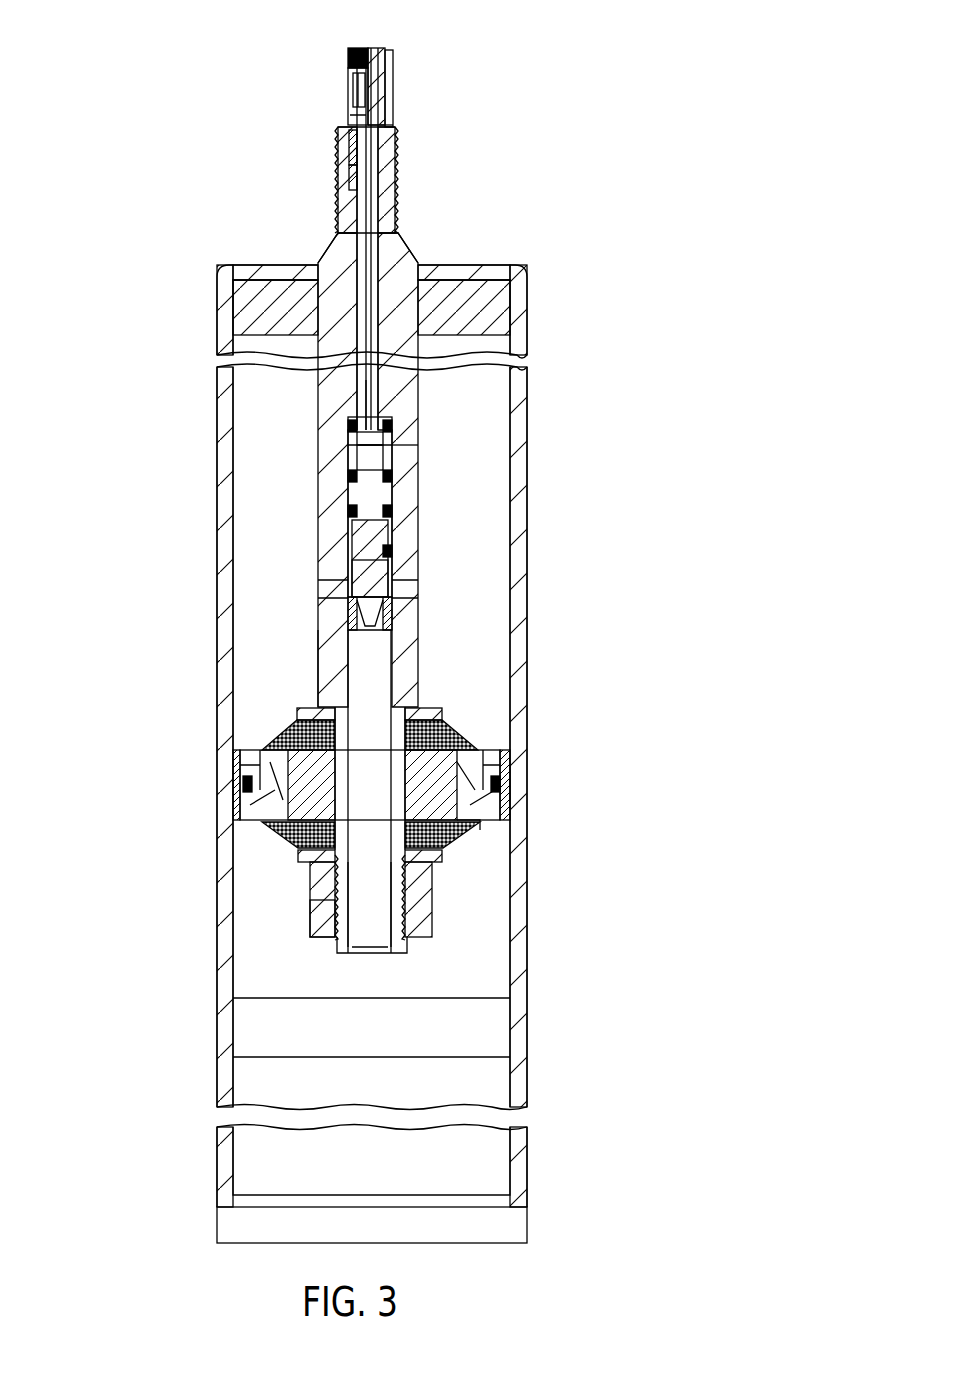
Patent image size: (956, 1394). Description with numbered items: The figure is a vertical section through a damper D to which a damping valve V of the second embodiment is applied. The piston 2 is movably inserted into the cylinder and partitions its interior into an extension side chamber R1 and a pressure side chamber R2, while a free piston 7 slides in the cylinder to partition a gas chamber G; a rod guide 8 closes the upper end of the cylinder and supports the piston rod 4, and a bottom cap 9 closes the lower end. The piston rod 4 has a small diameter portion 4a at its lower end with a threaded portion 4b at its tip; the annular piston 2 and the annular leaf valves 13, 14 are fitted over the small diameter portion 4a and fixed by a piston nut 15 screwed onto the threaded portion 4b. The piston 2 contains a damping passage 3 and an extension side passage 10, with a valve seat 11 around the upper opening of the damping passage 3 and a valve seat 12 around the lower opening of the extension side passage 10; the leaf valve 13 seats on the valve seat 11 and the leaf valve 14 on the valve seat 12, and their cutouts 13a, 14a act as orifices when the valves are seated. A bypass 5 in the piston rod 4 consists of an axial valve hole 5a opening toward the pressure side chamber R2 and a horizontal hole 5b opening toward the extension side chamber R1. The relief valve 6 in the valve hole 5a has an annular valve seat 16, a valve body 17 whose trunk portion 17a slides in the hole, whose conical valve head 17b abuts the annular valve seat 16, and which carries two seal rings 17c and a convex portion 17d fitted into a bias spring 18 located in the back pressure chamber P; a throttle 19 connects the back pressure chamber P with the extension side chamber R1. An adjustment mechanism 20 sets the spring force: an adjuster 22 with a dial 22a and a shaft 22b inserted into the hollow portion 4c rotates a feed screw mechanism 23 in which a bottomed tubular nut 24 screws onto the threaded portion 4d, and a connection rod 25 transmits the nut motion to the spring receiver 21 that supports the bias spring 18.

The piston 2 is at (513, 752).
The damping passage 3 is at (278, 780).
The piston rod 4 is at (424, 240).
The small diameter portion 4a is at (263, 819).
The threaded portion 4b is at (433, 900).
The hollow portion 4c is at (400, 212).
The threaded portion 4d is at (393, 165).
The bypass 5 is at (272, 893).
The valve hole 5a is at (386, 694).
The horizontal hole 5b is at (412, 590).
The relief valve 6 is at (395, 556).
The free piston 7 is at (485, 1030).
The rod guide 8 is at (490, 316).
The bottom cap 9 is at (225, 1226).
The extension side passage 10 is at (470, 795).
The valve seat 11 is at (237, 758).
The valve seat 12 is at (485, 823).
The leaf valve 13 is at (292, 722).
The cutout 13a is at (234, 766).
The leaf valve 14 is at (474, 846).
The cutout 14a is at (490, 836).
The piston nut 15 is at (330, 916).
The annular valve seat 16 is at (317, 667).
The valve body 17 is at (349, 548).
The trunk portion 17a is at (355, 477).
The valve head 17b is at (350, 607).
The seal ring 17c is at (352, 500).
The convex portion 17d is at (395, 480).
The bias spring 18 is at (358, 450).
The throttle 19 is at (395, 450).
The adjustment mechanism 20 is at (346, 102).
The spring receiver 21 is at (360, 432).
The adjuster 22 is at (350, 62).
The dial 22a is at (386, 50).
The shaft 22b is at (386, 127).
The feed screw mechanism 23 is at (354, 150).
The nut 24 is at (357, 172).
The connection rod 25 is at (332, 265).
The damper D is at (216, 228).
The gas chamber G is at (485, 1168).
The back pressure chamber P is at (392, 432).
The extension side chamber R1 is at (478, 402).
The pressure side chamber R2 is at (455, 970).
The damping valve V is at (330, 662).